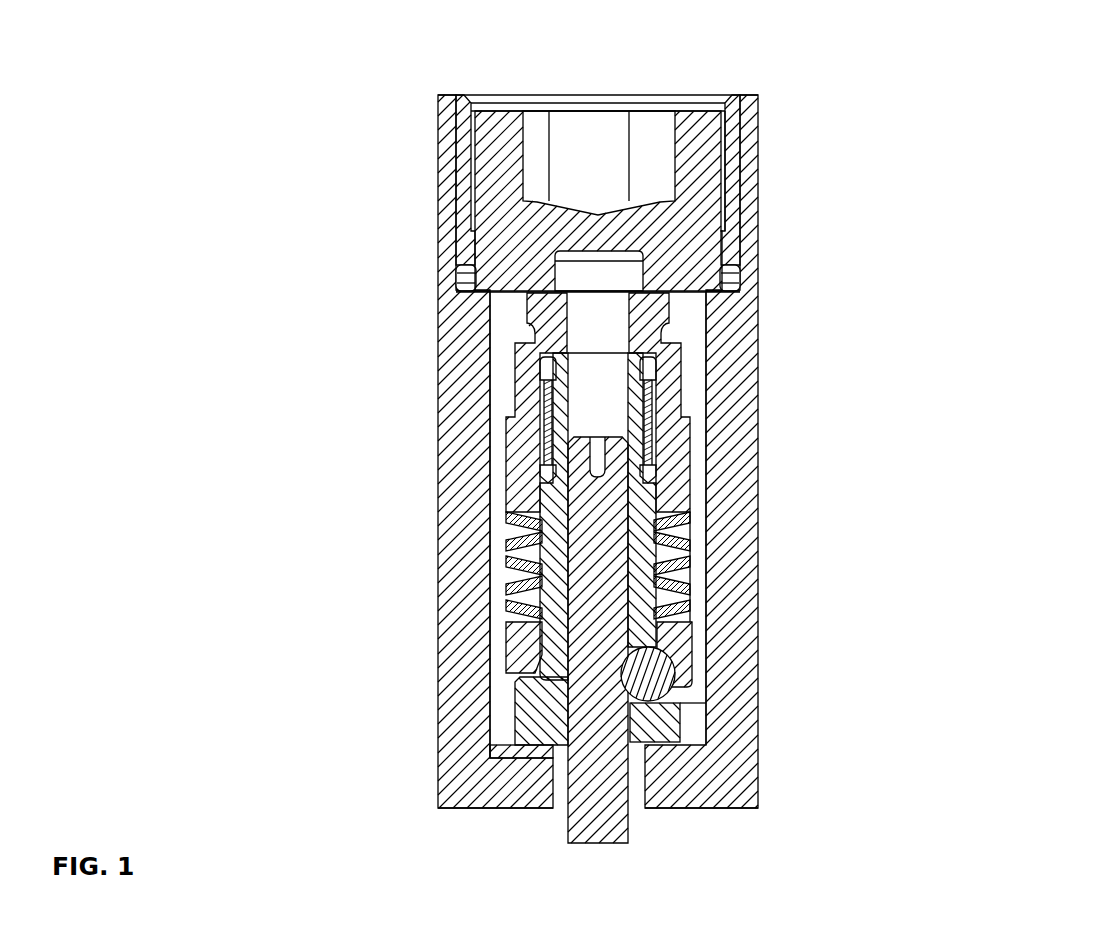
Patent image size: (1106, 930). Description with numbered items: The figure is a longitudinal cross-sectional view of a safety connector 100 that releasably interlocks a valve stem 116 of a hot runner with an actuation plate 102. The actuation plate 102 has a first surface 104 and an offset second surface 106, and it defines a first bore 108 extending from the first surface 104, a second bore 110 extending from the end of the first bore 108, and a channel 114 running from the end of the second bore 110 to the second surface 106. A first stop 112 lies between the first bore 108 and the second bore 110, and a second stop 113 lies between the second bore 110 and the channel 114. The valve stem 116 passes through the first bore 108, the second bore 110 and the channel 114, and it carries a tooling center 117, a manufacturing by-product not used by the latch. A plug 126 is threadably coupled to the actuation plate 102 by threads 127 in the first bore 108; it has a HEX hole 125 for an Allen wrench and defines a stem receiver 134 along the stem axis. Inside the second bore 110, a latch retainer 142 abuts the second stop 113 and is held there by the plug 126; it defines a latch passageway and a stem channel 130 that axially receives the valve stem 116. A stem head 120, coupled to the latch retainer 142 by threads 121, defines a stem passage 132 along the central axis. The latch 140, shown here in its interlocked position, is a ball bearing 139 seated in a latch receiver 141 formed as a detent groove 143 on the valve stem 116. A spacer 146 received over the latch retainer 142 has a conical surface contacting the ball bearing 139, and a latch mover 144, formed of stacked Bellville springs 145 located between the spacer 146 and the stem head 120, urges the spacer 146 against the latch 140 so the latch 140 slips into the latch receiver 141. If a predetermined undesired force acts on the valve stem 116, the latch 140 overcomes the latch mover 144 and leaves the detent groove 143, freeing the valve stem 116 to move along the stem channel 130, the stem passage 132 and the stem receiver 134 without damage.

The safety connector 100 is at (773, 70).
The actuation plate 102 is at (438, 190).
The first surface 104 is at (452, 95).
The second surface 106 is at (470, 808).
The first bore 108 is at (457, 205).
The second bore 110 is at (489, 610).
The first stop 112 is at (468, 290).
The second stop 113 is at (508, 742).
The channel 114 is at (550, 757).
The valve stem 116 is at (632, 826).
The tooling center 117 is at (605, 453).
The stem head 120 is at (672, 423).
The threads 121 is at (540, 423).
The HEX hole 125 is at (652, 150).
The plug 126 is at (697, 178).
The threads 127 is at (729, 208).
The stem channel 130 is at (617, 391).
The stem passage 132 is at (617, 327).
The stem receiver 134 is at (620, 265).
The ball bearing 139 is at (667, 688).
The latch 140 is at (848, 716).
The latch receiver 141 is at (382, 628).
The latch retainer 142 is at (668, 723).
The detent groove 143 is at (570, 673).
The latch mover 144 is at (865, 564).
The spring 145 is at (688, 578).
The spacer 146 is at (690, 642).